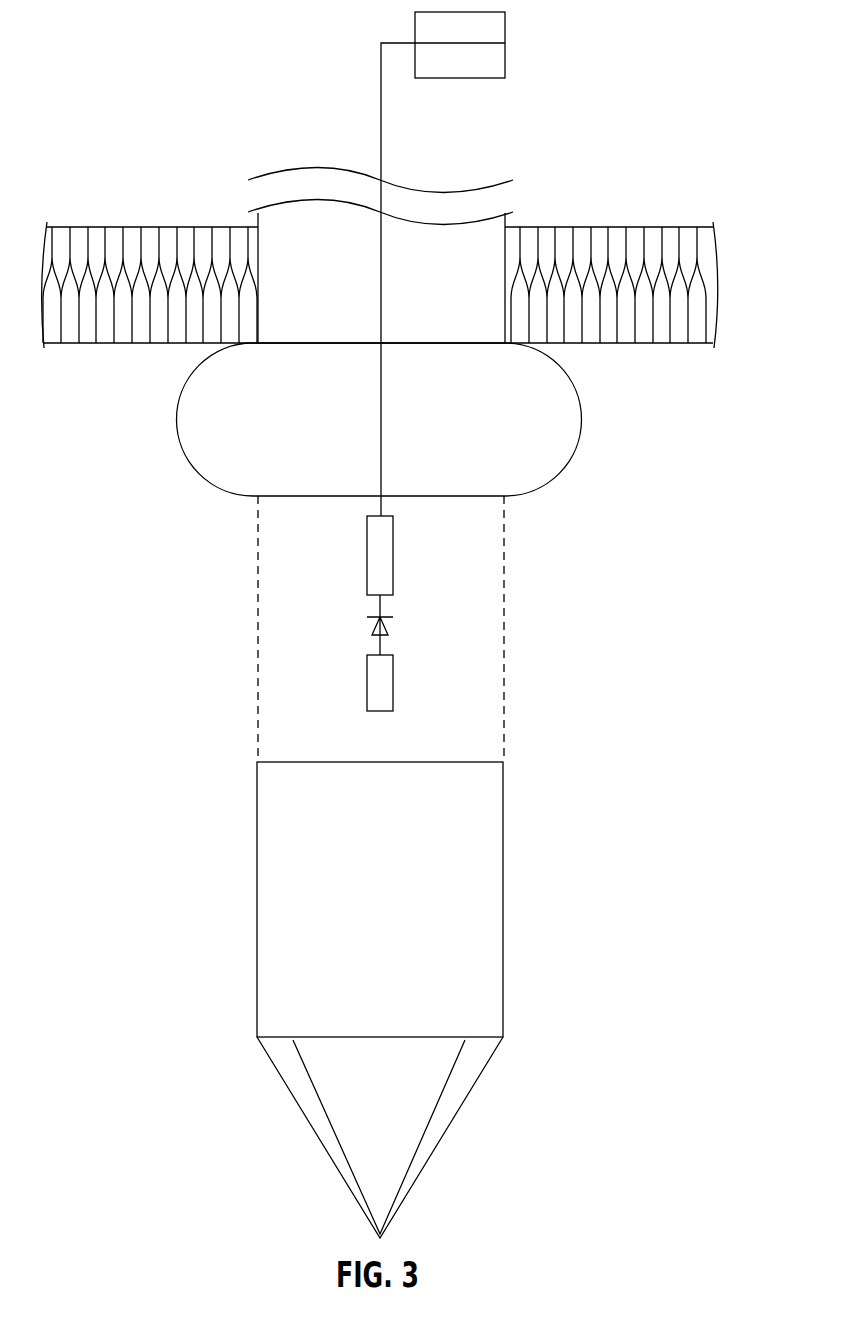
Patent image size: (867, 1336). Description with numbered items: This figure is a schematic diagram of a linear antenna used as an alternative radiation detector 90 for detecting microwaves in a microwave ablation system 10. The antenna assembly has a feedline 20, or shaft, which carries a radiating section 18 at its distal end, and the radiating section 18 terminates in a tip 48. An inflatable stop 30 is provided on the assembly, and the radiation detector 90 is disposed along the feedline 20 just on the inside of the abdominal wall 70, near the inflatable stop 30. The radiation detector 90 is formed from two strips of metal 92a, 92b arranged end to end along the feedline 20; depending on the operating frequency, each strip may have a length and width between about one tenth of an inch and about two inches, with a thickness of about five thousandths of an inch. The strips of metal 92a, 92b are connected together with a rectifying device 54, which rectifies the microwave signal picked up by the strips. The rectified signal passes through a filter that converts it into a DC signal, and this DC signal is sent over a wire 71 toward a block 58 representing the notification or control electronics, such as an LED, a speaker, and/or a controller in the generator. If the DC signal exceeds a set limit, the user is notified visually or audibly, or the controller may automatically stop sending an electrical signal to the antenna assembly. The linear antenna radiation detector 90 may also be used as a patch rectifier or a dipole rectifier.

The microwave ablation system 10 is at (621, 487).
The radiating section 18 is at (503, 925).
The feedline 20 is at (257, 703).
The inflatable stop 30 is at (582, 420).
The tip 48 is at (470, 1097).
The rectifying device 54 is at (393, 628).
The controller 58 is at (460, 45).
The abdominal wall 70 is at (645, 227).
The wire 71 is at (505, 50).
The radiation detector 90 is at (328, 573).
The strip of metal 92a is at (393, 570).
The strip of metal 92b is at (393, 688).